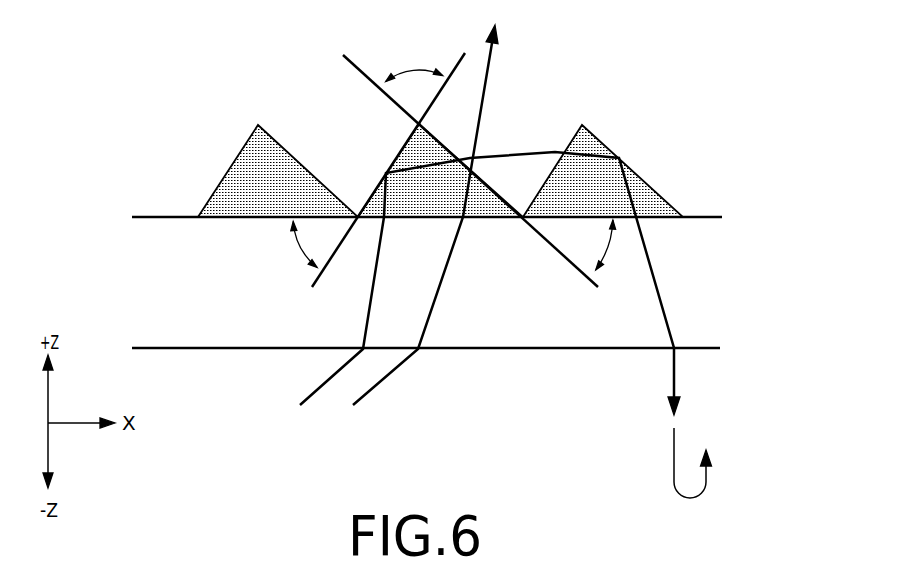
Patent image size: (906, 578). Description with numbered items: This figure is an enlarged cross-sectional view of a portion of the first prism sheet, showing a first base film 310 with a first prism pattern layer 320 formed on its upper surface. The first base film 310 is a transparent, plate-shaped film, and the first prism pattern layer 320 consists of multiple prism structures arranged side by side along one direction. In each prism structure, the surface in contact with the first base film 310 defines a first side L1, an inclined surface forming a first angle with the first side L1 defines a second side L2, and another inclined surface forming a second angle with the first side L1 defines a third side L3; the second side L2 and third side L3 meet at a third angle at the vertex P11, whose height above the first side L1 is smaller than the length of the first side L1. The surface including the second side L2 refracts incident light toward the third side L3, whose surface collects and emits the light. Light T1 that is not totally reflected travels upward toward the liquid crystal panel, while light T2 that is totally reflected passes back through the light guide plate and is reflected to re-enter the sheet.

The first prism pattern layer 320 is at (200, 150).
The first base film 310 is at (200, 308).
The first side L1 is at (412, 220).
The second side L2 is at (381, 183).
The third side L3 is at (499, 192).
The vertex P11 is at (416, 124).
The light not totally reflected T1 is at (487, 88).
The totally reflected light T2 is at (707, 478).